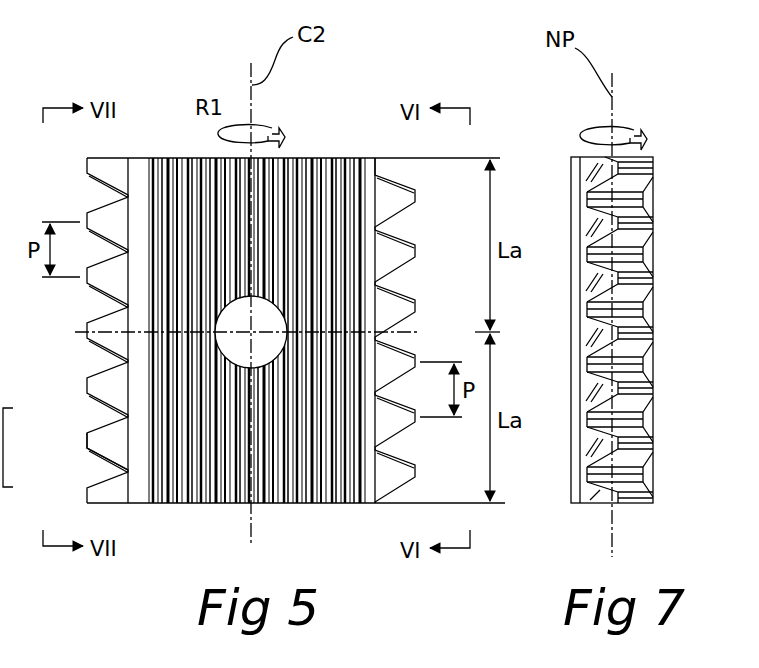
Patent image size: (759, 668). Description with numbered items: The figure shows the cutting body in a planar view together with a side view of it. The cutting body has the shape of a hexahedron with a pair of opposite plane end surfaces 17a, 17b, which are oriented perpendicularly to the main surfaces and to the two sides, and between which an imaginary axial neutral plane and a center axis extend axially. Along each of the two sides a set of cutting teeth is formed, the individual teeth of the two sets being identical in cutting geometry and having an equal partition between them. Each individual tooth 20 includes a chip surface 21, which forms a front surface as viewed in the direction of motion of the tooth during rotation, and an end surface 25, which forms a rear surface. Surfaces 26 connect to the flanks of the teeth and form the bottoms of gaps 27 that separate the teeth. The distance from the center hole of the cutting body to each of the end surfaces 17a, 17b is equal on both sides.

In FIG. 5, the end surface 17a is at (327, 158).
In FIG. 5, the end surface 17b is at (327, 503).
In FIG. 5, the tooth 20 is at (73, 200).
In FIG. 5, the chip surface 21 is at (100, 437).
In FIG. 5, the end surface 25 is at (407, 302).
In FIG. 7, the end surface 25 is at (592, 445).
In FIG. 5, the surfaces 26 is at (377, 227).
In FIG. 5, the gaps 27 is at (400, 276).